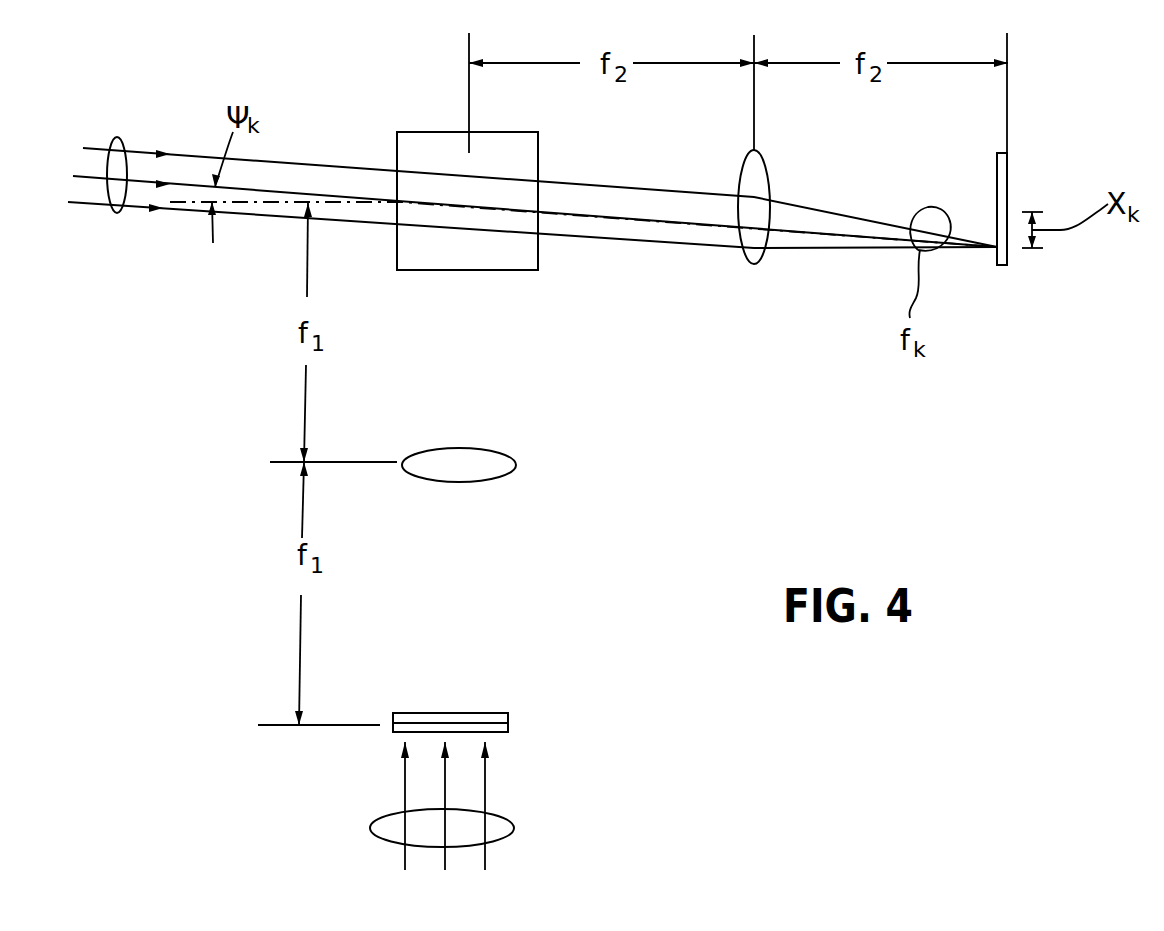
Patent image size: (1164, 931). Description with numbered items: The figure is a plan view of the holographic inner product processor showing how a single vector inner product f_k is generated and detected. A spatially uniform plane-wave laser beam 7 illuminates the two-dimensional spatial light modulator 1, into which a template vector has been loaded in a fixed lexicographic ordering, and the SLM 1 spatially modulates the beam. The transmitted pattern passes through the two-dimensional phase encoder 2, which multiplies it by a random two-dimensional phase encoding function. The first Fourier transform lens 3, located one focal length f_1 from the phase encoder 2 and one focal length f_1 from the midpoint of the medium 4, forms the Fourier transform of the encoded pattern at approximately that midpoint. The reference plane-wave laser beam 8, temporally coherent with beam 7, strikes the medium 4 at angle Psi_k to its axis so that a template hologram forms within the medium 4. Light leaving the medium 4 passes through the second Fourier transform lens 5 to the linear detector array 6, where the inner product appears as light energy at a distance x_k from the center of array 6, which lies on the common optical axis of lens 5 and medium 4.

The spatial light modulator 1 is at (508, 728).
The phase encoder 2 is at (508, 716).
The first Fourier transform lens 3 is at (516, 462).
The medium 4 is at (538, 270).
The second Fourier transform lens 5 is at (754, 265).
The linear detector array 6 is at (1002, 265).
The plane-wave laser beam 7 is at (370, 828).
The reference plane-wave laser beam 8 is at (117, 137).